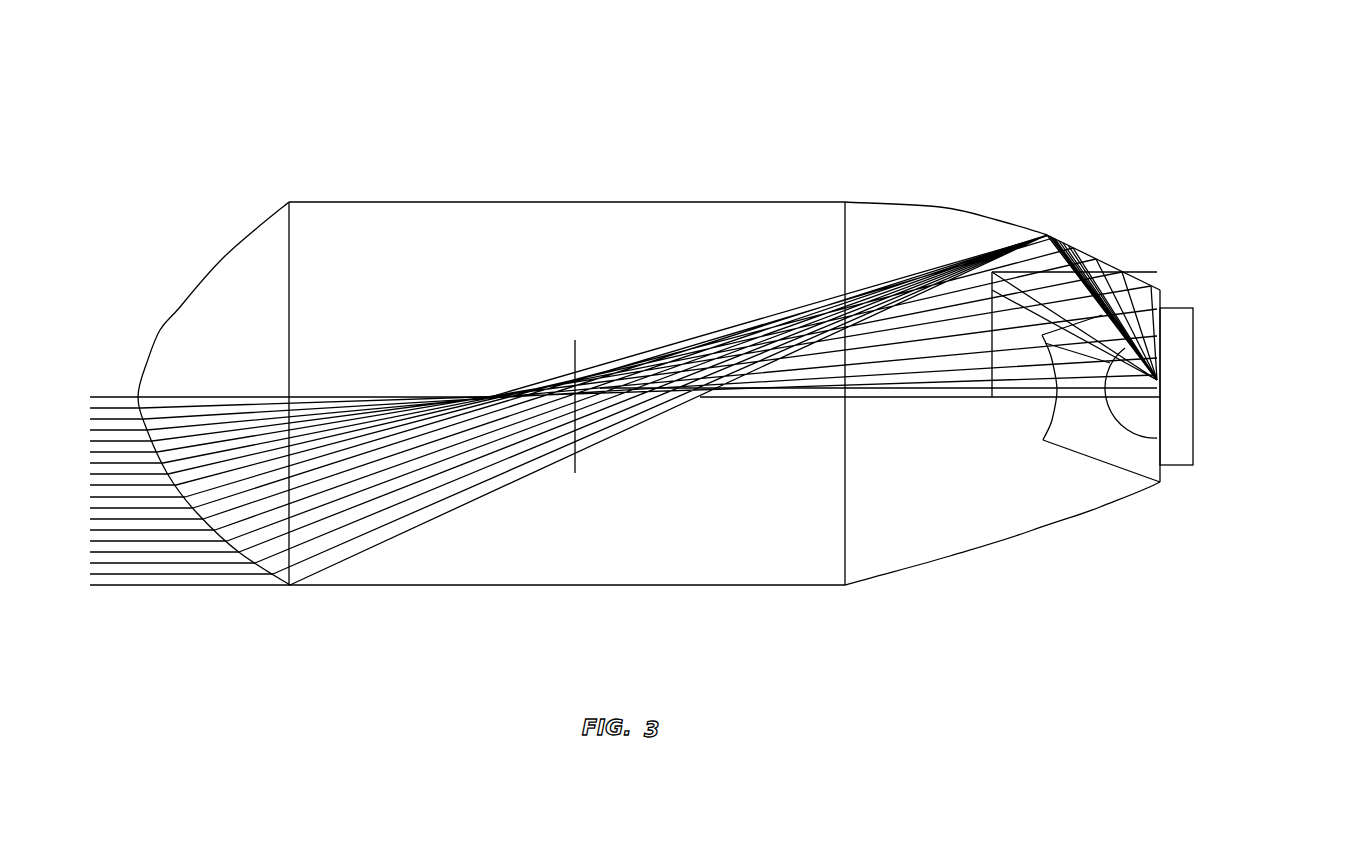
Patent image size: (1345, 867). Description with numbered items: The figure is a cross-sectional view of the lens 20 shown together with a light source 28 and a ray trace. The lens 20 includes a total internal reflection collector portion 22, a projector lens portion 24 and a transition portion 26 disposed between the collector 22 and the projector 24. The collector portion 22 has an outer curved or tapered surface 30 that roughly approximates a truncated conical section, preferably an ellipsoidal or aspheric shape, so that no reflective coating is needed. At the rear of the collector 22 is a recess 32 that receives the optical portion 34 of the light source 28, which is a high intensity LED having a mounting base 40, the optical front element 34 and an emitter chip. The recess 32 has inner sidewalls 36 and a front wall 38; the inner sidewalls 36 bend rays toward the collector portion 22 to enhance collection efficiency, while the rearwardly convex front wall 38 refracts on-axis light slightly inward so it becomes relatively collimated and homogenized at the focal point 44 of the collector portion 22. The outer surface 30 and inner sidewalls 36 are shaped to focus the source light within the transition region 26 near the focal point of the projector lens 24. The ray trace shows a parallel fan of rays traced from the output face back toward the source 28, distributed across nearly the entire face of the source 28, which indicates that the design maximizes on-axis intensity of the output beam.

The lens 20 is at (969, 166).
The total internal reflection collector portion 22 is at (993, 237).
The projector lens portion 24 is at (243, 280).
The transition portion 26 is at (598, 217).
The light source 28 is at (1197, 392).
The outer curved or tapered surface 30 is at (940, 208).
The recess 32 is at (1113, 442).
The optical portion of the light source 34 is at (1147, 408).
The inner sidewalls 36 is at (1072, 445).
The front wall 38 is at (1040, 427).
The mounting base 40 is at (1187, 320).
The focal point 44 is at (582, 372).